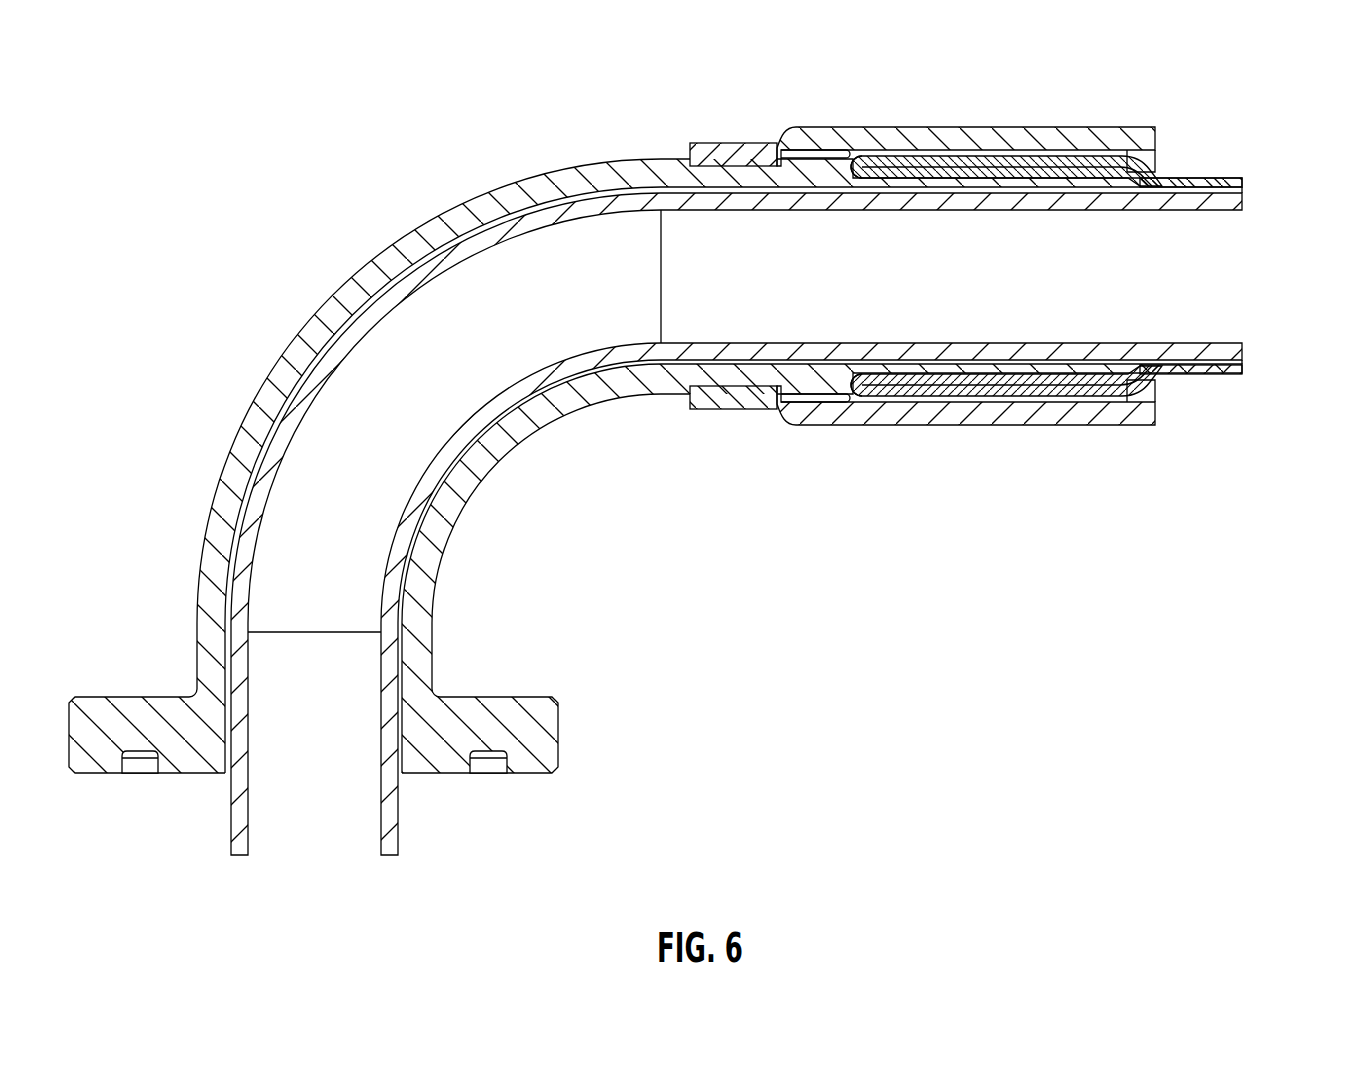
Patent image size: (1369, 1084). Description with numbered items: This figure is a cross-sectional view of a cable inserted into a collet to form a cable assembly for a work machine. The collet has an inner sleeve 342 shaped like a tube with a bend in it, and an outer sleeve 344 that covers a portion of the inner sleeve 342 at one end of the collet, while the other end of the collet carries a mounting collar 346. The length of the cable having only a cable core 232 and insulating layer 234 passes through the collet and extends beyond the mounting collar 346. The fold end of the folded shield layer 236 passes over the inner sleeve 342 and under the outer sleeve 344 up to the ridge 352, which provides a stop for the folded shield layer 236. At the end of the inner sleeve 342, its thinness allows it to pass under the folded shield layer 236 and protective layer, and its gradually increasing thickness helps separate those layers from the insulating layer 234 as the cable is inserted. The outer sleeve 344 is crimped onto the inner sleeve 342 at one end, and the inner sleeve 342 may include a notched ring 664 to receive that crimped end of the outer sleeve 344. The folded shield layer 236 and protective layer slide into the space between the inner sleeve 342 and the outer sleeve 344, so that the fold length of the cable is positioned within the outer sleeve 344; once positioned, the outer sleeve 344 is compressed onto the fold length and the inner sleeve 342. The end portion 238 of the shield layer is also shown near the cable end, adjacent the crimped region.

The cable core 232 is at (1244, 286).
The insulating layer 234 is at (1244, 201).
The folded shield layer 236 is at (1095, 166).
The end portion of outer tube layer 238 is at (1160, 184).
The inner sleeve 342 is at (860, 162).
The outer sleeve 344 is at (1040, 140).
The mounting collar 346 is at (480, 705).
The ridge 352 is at (813, 165).
The notched ring 664 is at (693, 168).